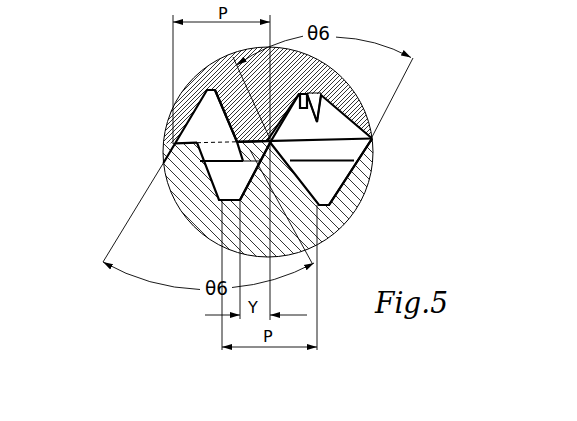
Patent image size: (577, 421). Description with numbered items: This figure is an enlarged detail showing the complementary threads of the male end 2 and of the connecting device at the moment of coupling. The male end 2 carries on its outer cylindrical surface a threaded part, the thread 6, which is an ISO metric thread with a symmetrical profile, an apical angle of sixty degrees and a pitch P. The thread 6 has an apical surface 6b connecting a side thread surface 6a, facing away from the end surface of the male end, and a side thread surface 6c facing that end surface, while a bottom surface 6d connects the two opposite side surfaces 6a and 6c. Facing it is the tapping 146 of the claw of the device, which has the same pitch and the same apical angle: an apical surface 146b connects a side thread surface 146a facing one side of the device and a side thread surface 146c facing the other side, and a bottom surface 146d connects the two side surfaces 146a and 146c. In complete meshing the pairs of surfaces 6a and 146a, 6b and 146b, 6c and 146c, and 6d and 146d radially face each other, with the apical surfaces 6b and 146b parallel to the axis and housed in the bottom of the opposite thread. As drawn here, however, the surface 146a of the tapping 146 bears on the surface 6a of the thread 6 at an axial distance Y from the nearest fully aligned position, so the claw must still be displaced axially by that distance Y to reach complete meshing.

The male end 2 is at (338, 231).
The thread 6 is at (418, 137).
The side thread surface 6a is at (245, 149).
The apical surface 6b is at (280, 138).
The side thread surface 6c is at (213, 161).
The bottom surface 6d is at (328, 203).
The tapping 146 is at (167, 108).
The side thread surface 146a is at (302, 110).
The apical surface 146b is at (245, 177).
The side thread surface 146c is at (222, 125).
The bottom surface 146d is at (318, 92).